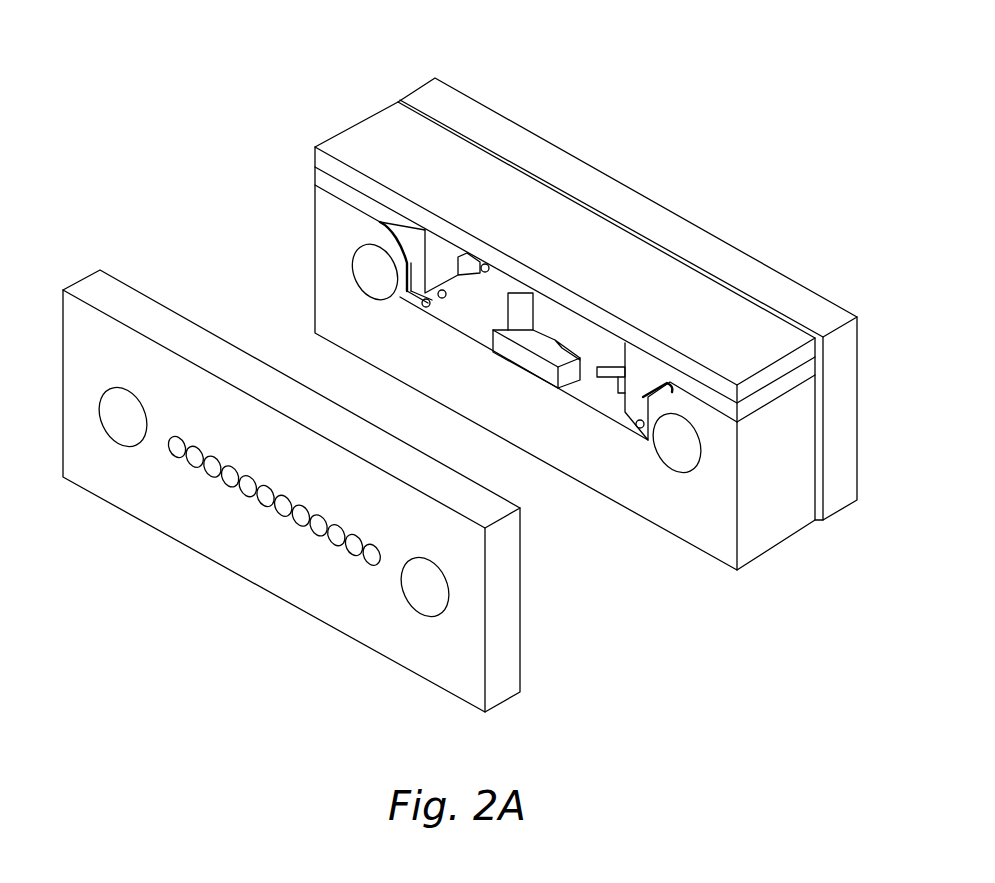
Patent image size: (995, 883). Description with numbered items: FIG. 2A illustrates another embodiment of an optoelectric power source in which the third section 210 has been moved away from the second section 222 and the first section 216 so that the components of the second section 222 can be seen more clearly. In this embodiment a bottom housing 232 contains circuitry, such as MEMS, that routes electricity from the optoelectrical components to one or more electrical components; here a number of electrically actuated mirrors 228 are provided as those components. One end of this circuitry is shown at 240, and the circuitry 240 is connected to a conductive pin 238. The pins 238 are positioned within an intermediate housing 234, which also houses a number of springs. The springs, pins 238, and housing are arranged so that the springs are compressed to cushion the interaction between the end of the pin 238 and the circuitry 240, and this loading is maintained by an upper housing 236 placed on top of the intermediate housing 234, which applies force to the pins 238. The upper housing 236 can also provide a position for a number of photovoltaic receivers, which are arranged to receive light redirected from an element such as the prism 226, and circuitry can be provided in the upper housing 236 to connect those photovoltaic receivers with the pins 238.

The third section 210 is at (84, 286).
The first section 216 is at (415, 91).
The second section 222 is at (203, 57).
The prism 226 is at (524, 362).
The electrically actuated mirrors 228 is at (607, 372).
The bottom housing 232 is at (314, 269).
The intermediate housing 234 is at (315, 180).
The upper housing 236 is at (357, 123).
The conductive pin 238 is at (407, 302).
The circuitry 240 is at (412, 305).